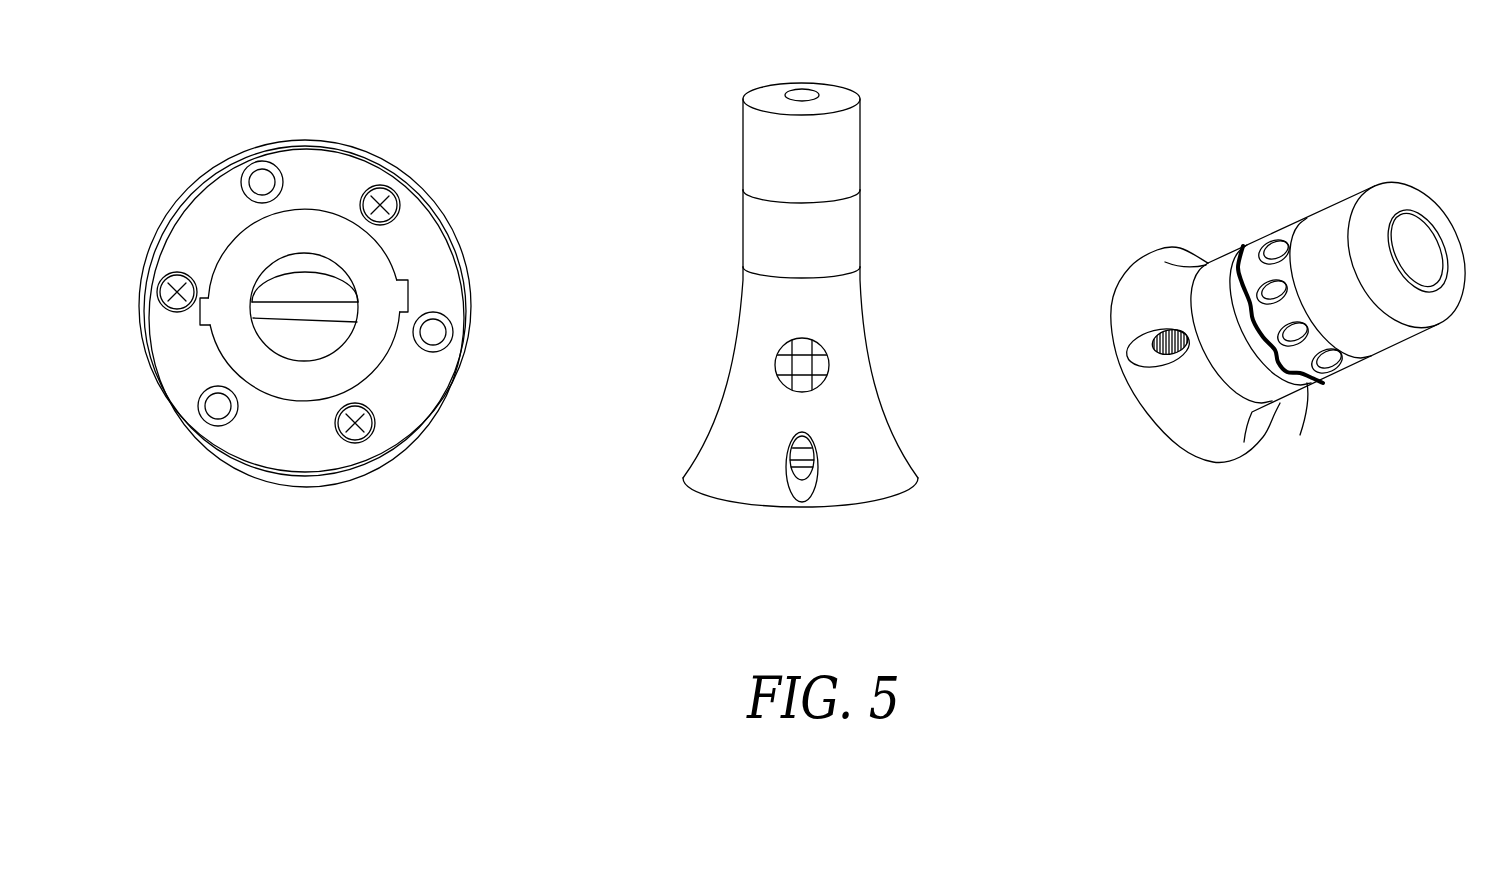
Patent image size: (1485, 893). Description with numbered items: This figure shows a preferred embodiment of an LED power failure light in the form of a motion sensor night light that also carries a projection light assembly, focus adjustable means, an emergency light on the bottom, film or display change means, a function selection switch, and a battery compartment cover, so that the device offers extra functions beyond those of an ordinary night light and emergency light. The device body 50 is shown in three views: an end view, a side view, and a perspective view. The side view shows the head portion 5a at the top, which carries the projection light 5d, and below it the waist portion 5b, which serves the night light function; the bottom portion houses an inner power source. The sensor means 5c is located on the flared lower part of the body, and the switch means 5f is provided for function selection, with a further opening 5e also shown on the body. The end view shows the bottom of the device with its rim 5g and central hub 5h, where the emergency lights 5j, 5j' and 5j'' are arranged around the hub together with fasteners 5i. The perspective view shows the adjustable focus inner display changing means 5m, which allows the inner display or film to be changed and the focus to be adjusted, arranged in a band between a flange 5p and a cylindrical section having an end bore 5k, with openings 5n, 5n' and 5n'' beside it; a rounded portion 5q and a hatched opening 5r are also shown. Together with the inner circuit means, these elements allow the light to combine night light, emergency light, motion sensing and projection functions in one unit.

The spool body 50 is at (848, 305).
The head portion 5a is at (760, 155).
The waist portion 5b is at (853, 223).
The sensor means 5c is at (732, 483).
The projection light 5d is at (800, 94).
The vent hole 5e is at (785, 355).
The switch means 5f is at (802, 463).
The flange rim 5g is at (358, 150).
The hub 5h is at (233, 257).
The screws 5i is at (368, 423).
The emergency light 5j is at (262, 139).
The emergency light 5j' is at (194, 438).
The emergency light 5j'' is at (474, 360).
The bore 5k is at (1413, 243).
The adjustable focus inner display changing means 5m is at (1260, 273).
The hole 5n is at (1300, 271).
The hole 5n' is at (1343, 349).
The hole 5n'' is at (1336, 400).
The flange 5p is at (1268, 385).
The dome portion 5q is at (1227, 440).
The hatched opening 5r is at (1150, 338).